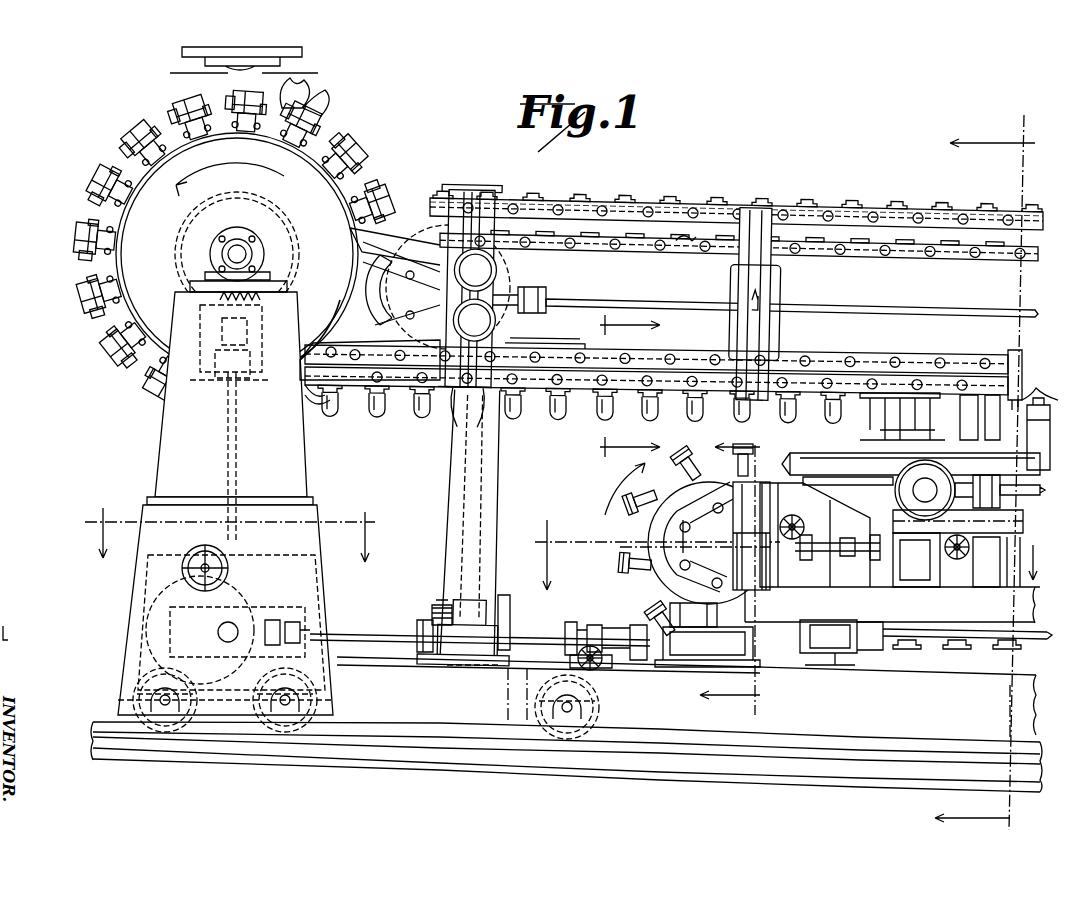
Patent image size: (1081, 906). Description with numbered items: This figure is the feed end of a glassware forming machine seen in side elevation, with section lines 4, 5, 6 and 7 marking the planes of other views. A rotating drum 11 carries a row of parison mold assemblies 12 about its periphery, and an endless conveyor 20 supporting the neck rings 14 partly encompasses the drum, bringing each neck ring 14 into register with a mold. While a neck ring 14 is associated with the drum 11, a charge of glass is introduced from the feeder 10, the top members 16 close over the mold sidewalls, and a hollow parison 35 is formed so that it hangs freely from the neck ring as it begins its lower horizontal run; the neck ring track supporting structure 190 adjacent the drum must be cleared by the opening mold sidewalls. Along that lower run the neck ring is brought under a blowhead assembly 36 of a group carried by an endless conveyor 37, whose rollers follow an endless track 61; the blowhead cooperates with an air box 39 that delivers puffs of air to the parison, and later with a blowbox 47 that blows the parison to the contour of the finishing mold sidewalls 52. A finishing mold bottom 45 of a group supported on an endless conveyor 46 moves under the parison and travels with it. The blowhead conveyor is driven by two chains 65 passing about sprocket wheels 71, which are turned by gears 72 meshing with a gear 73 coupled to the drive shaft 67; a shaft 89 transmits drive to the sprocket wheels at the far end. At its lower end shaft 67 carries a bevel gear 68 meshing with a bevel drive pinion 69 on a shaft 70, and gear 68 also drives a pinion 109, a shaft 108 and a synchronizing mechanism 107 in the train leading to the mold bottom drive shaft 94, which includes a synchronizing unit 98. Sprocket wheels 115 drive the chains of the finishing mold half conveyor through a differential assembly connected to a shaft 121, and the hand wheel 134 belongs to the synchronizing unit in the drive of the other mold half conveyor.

The feeder 10 is at (300, 60).
The drum 11 is at (112, 272).
The parison mold assemblies 12 is at (89, 218).
The neck rings 14 is at (449, 185).
The top members 16 is at (316, 102).
The endless conveyor 20 is at (736, 199).
The hollow parison 35 is at (357, 408).
The blowhead assembly 36 is at (739, 255).
The blowhead conveyor 37 is at (660, 250).
The air box 39 is at (656, 372).
The section line 4- 4 is at (993, 472).
The finishing mold bottom 45 is at (702, 458).
The mold bottom conveyor 46 is at (672, 493).
The blowbox 47 is at (952, 356).
The section line 5- 5 is at (230, 524).
The finishing mold sidewalls 52 is at (1023, 364).
The section line 6- 6 is at (737, 575).
The endless track 61 is at (592, 250).
The drive chains 65 is at (440, 298).
The drive shaft 67 is at (470, 494).
The bevel gear 68 is at (440, 612).
The bevel drive pinion 69 is at (457, 668).
The section line 7- 7 is at (620, 386).
The shaft 70 is at (363, 634).
The sprocket wheels 71 is at (516, 283).
The gears 72 is at (358, 262).
The gear 73 is at (385, 300).
The shaft 89 is at (869, 299).
The mold bottom drive shaft 94 is at (997, 590).
The synchronizing unit 98 is at (795, 516).
The synchronizing mechanism 107 is at (599, 625).
The shaft 108 is at (529, 637).
The pinion 109 is at (500, 630).
The sprocket wheels 115 is at (898, 476).
The shaft 121 is at (1022, 501).
The hand wheel 134 is at (955, 586).
The neck ring track supporting structure 190 is at (351, 323).